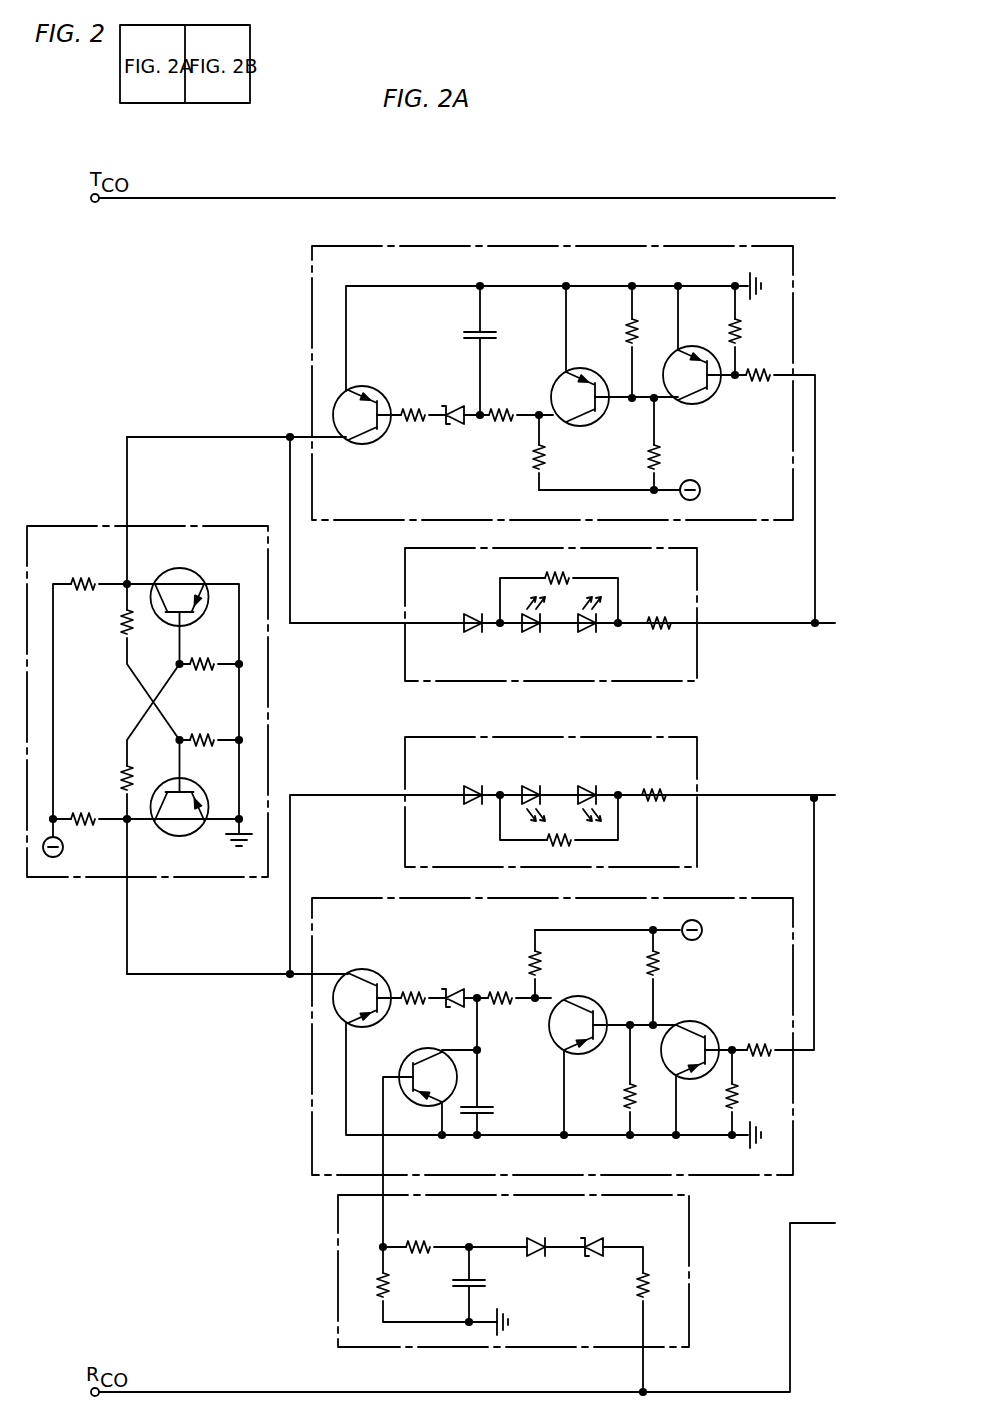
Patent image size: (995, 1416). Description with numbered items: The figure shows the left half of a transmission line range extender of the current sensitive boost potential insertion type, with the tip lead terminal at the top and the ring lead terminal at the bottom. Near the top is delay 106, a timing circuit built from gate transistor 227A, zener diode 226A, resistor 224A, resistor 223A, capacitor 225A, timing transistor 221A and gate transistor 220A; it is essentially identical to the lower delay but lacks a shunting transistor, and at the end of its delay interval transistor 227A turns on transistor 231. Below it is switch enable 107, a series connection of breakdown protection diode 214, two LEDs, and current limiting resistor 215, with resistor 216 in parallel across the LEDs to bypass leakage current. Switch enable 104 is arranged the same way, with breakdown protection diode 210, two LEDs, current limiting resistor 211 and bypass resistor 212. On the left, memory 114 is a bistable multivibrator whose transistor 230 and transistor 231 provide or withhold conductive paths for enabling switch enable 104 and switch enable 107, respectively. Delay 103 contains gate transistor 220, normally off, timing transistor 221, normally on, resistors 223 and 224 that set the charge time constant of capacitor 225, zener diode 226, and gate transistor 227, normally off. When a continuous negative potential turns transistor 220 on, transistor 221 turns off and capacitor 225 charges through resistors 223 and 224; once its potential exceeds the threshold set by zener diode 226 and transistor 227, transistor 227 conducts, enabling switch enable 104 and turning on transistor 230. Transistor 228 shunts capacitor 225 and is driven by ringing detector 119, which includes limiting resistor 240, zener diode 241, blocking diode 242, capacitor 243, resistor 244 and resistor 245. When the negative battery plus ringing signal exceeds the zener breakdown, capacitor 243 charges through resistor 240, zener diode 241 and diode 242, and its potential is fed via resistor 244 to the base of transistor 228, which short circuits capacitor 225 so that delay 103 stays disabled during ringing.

The delay 106 is at (690, 248).
The switch enable 107 is at (698, 554).
The switch enable 104 is at (698, 762).
The delay 103 is at (726, 898).
The memory 114 is at (268, 664).
The ringing detector 119 is at (689, 1220).
The capacitor 225A is at (483, 332).
The gate transistor 227A is at (375, 390).
The resistor 224A is at (503, 406).
The zener diode 226A is at (457, 425).
The timing transistor 221A is at (597, 420).
The resistor 223A is at (547, 462).
The gate transistor 220A is at (714, 397).
The transistor 231 is at (196, 577).
The transistor 230 is at (176, 836).
The resistor 216 is at (568, 574).
The breakdown protection diode 214 is at (471, 612).
The current limiting resistor 215 is at (663, 614).
The breakdown protection diode 210 is at (478, 806).
The current limiting resistor 211 is at (653, 808).
The resistor 212 is at (568, 850).
The gate transistor 227 is at (375, 975).
The zener diode 226 is at (446, 989).
The resistor 223 is at (527, 952).
The resistor 224 is at (497, 990).
The timing transistor 221 is at (574, 998).
The gate transistor 220 is at (700, 1025).
The transistor 228 is at (419, 1050).
The capacitor 225 is at (495, 1108).
The resistor 244 is at (427, 1240).
The resistor 245 is at (375, 1285).
The capacitor 243 is at (453, 1285).
The blocking diode 242 is at (538, 1257).
The zener diode 241 is at (600, 1242).
The limiting resistor 240 is at (637, 1295).